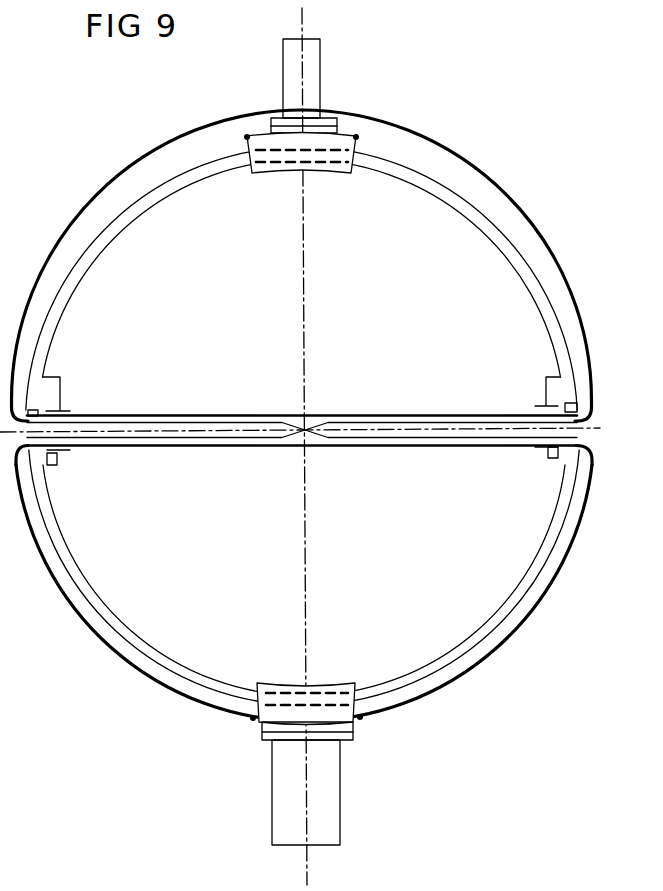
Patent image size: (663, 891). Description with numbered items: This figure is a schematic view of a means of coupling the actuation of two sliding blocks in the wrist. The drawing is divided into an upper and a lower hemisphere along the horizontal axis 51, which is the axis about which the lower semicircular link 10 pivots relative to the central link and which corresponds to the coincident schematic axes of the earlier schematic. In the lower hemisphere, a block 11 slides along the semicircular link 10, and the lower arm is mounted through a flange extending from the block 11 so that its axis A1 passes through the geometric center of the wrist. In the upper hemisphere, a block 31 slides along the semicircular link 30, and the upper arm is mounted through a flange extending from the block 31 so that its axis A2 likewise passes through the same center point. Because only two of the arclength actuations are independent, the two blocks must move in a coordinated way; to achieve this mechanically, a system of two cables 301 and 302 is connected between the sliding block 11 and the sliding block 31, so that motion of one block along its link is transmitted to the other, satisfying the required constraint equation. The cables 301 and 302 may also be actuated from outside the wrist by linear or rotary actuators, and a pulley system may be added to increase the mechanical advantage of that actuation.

The block 31 is at (332, 146).
The cable 301 is at (507, 218).
The semicircular link 30 is at (477, 218).
The axis of the arm A2 is at (304, 302).
The axis 51 is at (208, 421).
The axis of the arm A1 is at (306, 541).
The semicircular link 10 is at (478, 635).
The cable 302 is at (537, 605).
The block 11 is at (322, 716).